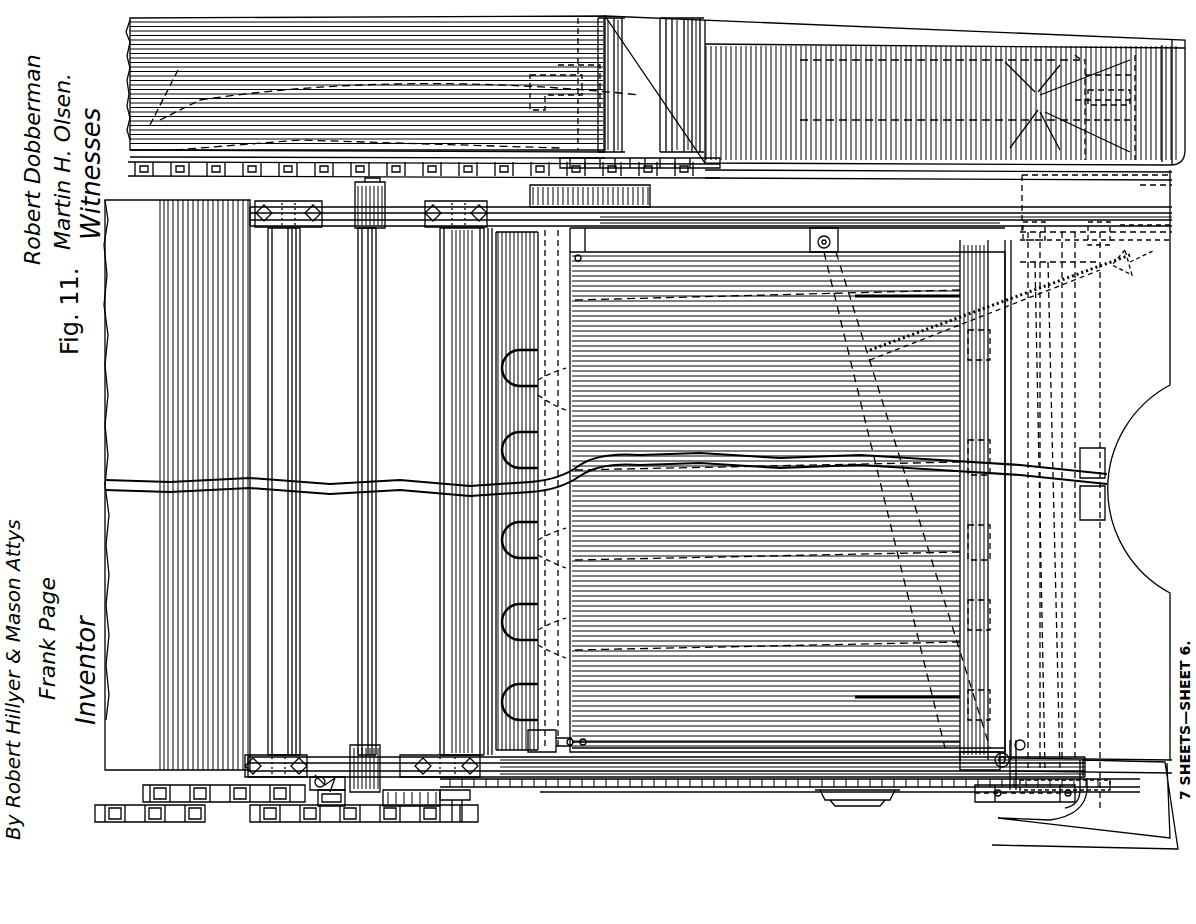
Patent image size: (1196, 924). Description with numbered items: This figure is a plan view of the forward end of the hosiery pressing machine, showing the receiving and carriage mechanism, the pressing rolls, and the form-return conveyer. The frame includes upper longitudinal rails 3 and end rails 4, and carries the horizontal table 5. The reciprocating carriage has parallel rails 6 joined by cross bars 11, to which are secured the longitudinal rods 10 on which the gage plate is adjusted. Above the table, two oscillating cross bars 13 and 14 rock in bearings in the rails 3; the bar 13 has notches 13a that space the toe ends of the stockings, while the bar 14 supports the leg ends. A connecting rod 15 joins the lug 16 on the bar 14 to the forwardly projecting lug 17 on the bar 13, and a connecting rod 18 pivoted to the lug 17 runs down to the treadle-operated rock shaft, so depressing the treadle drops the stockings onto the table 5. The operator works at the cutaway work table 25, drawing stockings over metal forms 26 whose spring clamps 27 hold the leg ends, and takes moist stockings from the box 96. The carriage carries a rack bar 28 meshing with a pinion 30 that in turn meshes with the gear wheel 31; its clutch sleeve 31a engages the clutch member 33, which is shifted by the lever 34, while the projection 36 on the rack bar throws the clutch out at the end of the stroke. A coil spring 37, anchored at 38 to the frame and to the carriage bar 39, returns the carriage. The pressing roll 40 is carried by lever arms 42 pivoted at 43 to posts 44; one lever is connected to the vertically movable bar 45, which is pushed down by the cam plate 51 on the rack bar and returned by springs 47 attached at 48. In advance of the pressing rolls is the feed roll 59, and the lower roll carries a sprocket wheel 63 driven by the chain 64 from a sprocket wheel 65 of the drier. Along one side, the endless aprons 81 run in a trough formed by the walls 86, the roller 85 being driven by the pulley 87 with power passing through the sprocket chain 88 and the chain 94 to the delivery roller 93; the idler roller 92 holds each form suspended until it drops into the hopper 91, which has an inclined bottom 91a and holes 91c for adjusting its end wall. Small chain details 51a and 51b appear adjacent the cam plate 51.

The longitudinal horizontal rail 3 is at (780, 215).
The end rail 4 is at (1125, 563).
The horizontal table 5 is at (790, 494).
The carriage rail 6 is at (983, 802).
The longitudinal rod 10 is at (900, 296).
The cross bar 11 is at (1062, 795).
The oscillating cross bar 13 is at (530, 545).
The notch 13a is at (530, 372).
The oscillating cross bar 14 is at (899, 536).
The connecting rod 15 is at (845, 745).
The vertically extending lug 16 is at (995, 765).
The forwardly projecting lug 17 is at (568, 70).
The connecting rod 18 is at (572, 738).
The horizontal board or table 25 is at (1070, 521).
The metal form 26 is at (767, 470).
The catch or clamp 27 is at (921, 621).
The rack bar 28 is at (768, 790).
The pinion 30 is at (1130, 258).
The gear wheel 31 is at (472, 795).
The clutch member or sleeve 31a is at (478, 812).
The clutch sleeve 33 is at (411, 798).
The clutch shifter lever 34 is at (420, 822).
The projection 36 is at (852, 806).
The coil spring 37 is at (999, 307).
The spring anchor 38 is at (1096, 229).
The carriage bar 39 is at (822, 276).
The oscillating pressing roll 40 is at (300, 418).
The lever arm 42 is at (300, 200).
The lever pivot 43 is at (377, 412).
The post or standard 44 is at (365, 222).
The vertically movable bar 45 is at (360, 765).
The spring 47 is at (335, 778).
The spring attachment point 48 is at (320, 776).
The cam bar or plate 51 is at (636, 788).
The chain link 51a is at (560, 790).
The chain link 51b is at (698, 789).
The feed roll 59 is at (440, 328).
The sprocket wheel 63 is at (335, 798).
The sprocket chain 64 is at (195, 780).
The sprocket wheel 65 is at (160, 785).
The endless belt or apron 81 is at (367, 129).
The conveyer roller 85 is at (330, 60).
The trough wall 86 is at (138, 125).
The pulley 87 is at (620, 185).
The sprocket chain 88 is at (405, 170).
The receiver or hopper 91 is at (895, 111).
The inclined bottom 91a is at (1070, 107).
The hole 91c is at (1110, 175).
The idler roller 92 is at (662, 90).
The delivery roller 93 is at (660, 50).
The sprocket chain 94 is at (672, 168).
The box or receptacle 96 is at (1085, 803).